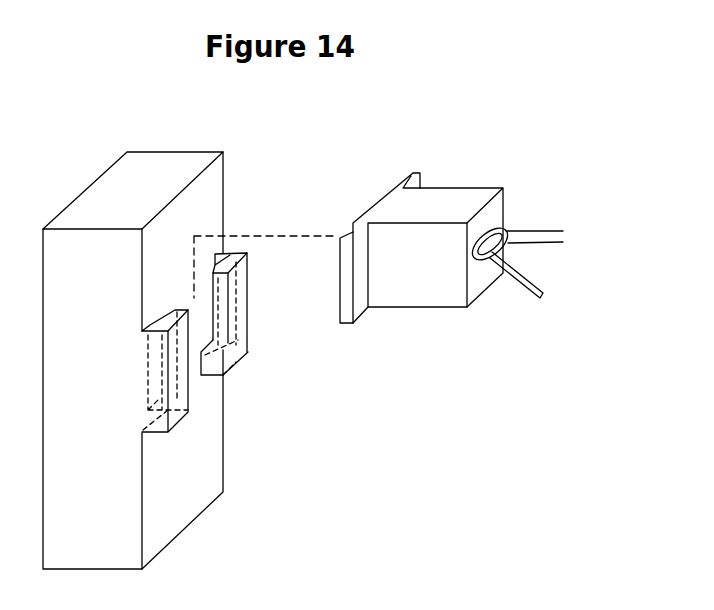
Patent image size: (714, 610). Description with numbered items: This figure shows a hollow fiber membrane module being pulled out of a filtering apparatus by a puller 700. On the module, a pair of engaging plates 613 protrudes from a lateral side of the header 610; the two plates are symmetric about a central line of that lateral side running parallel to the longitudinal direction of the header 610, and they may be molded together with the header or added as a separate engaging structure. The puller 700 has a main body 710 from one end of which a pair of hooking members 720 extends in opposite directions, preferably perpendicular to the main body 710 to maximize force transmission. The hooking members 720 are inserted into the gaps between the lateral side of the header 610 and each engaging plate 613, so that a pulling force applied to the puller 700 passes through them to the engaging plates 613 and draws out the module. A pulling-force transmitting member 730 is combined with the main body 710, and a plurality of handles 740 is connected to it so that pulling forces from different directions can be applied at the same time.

The header 610 is at (236, 164).
The engaging plates 613 is at (230, 344).
The puller 700 is at (482, 231).
The main body 710 is at (433, 198).
The hooking members 720 is at (351, 226).
The pulling-force transmitting member 730 is at (485, 262).
The handles 740 is at (523, 284).